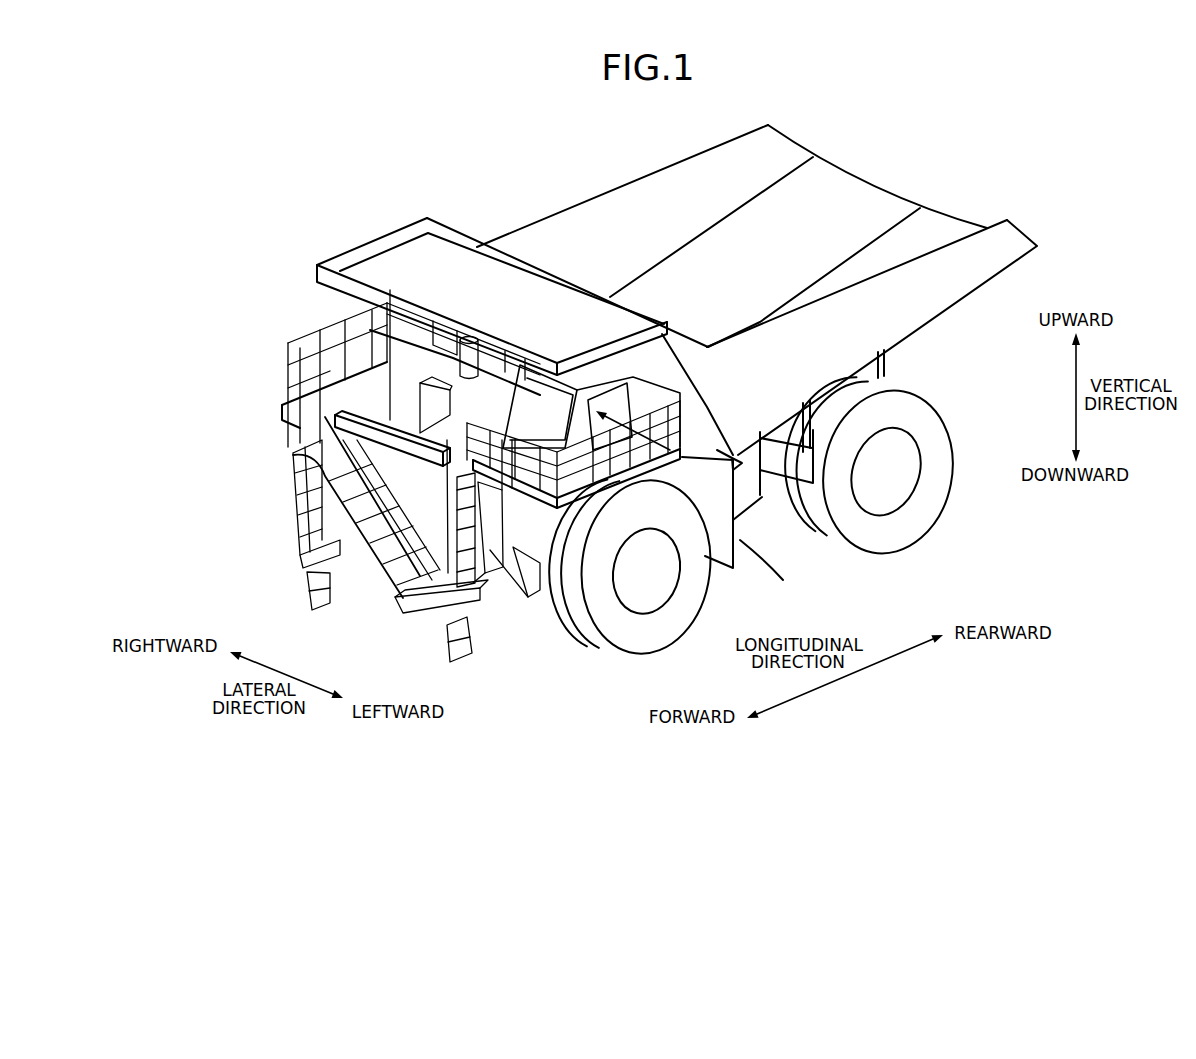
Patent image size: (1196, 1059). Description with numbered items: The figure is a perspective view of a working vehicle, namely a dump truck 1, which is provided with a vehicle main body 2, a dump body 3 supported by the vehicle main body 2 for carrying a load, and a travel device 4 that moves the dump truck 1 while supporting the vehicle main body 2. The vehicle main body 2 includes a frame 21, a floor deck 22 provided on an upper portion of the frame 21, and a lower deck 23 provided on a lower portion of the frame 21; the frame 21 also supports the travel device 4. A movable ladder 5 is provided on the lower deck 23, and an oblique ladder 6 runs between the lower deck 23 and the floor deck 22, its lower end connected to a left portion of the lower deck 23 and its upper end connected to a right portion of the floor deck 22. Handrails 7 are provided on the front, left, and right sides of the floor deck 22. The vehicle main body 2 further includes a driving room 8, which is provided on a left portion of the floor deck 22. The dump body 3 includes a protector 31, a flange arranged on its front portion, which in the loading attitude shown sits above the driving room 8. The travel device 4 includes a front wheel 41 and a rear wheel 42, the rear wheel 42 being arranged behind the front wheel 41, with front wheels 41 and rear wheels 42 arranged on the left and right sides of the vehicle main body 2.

The dump truck 1 is at (953, 168).
The vehicle main body 2 is at (329, 374).
The dump body 3 is at (659, 163).
The travel device 4 is at (948, 394).
The movable ladder 5 is at (472, 645).
The oblique ladder 6 is at (338, 527).
The handrails 7 is at (299, 343).
The driving room 8 is at (682, 457).
The frame 21 is at (507, 573).
The floor deck 22 is at (432, 397).
The lower deck 23 is at (407, 603).
The protector 31 is at (493, 278).
The front wheel 41 is at (686, 618).
The rear wheel 42 is at (945, 502).